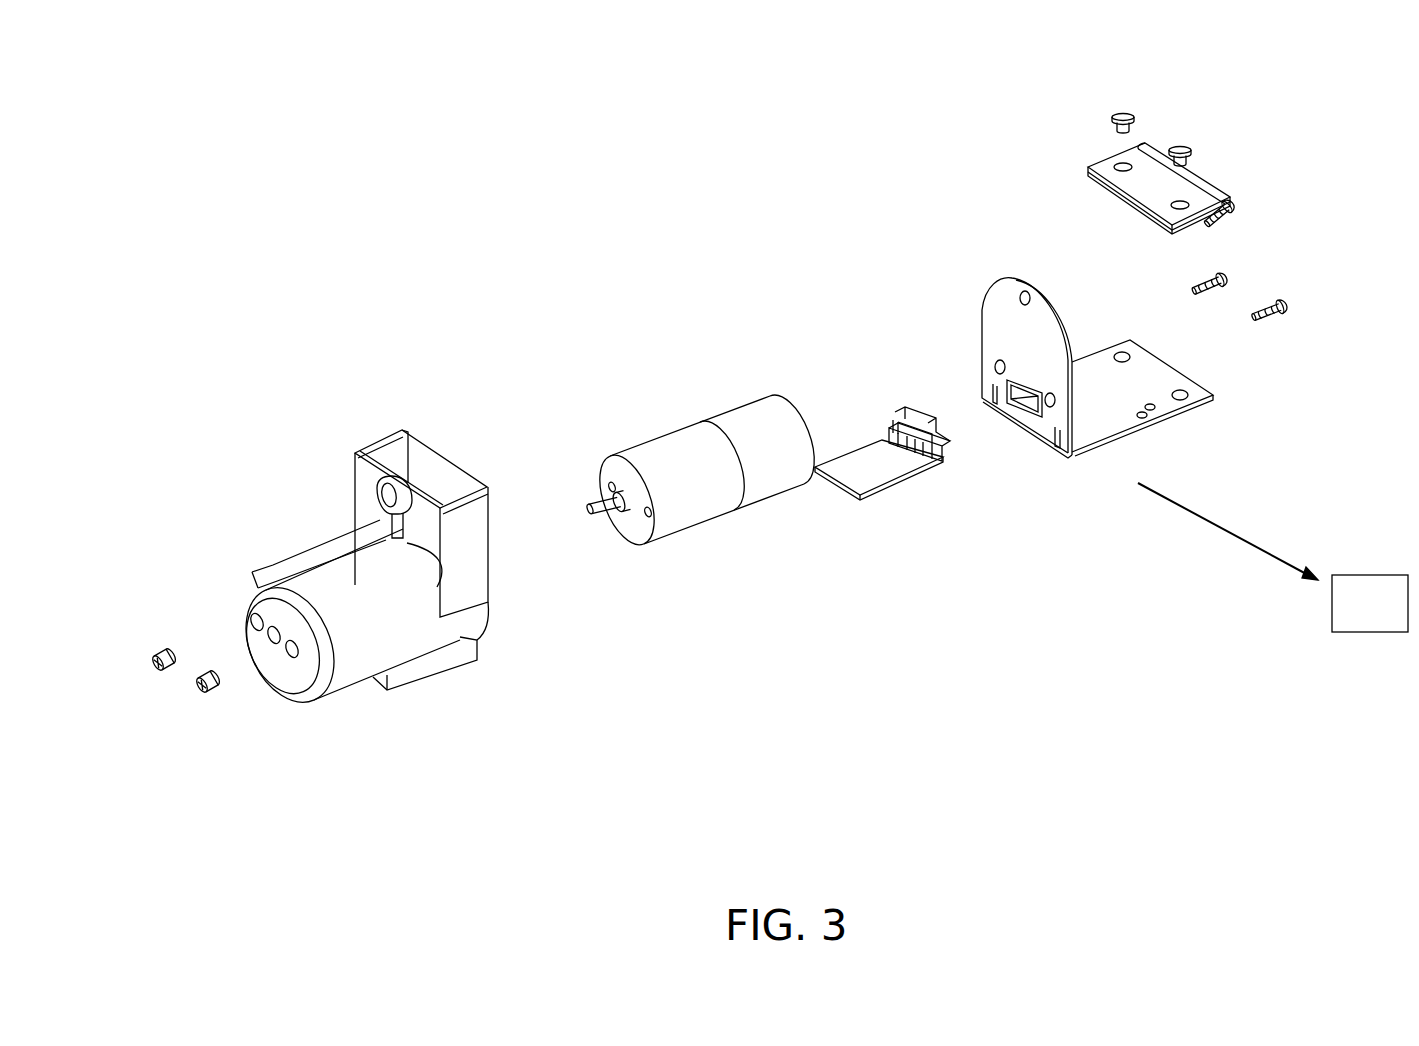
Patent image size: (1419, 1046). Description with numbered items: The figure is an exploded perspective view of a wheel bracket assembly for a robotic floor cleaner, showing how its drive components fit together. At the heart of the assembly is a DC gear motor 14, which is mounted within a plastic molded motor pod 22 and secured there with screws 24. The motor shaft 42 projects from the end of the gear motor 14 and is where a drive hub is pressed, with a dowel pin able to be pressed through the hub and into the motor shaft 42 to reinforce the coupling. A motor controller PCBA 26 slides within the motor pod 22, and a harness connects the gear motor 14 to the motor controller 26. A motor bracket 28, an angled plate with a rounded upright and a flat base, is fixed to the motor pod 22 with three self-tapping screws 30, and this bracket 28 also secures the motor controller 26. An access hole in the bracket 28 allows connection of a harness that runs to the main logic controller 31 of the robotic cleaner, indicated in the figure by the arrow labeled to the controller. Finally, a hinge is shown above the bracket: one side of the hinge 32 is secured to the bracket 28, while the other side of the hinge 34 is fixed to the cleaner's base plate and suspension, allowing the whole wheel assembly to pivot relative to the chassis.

The DC gear motor 14 is at (654, 453).
The motor pod 22 is at (360, 652).
The screws 24 is at (197, 690).
The motor controller PCBA 26 is at (942, 458).
The motor bracket 28 is at (1003, 320).
The self-tapping screws 30 is at (1238, 213).
The main logic controller 31 is at (1342, 613).
The hinge 32 is at (1160, 223).
The hinge 34 is at (1147, 183).
The motor shaft 42 is at (632, 530).